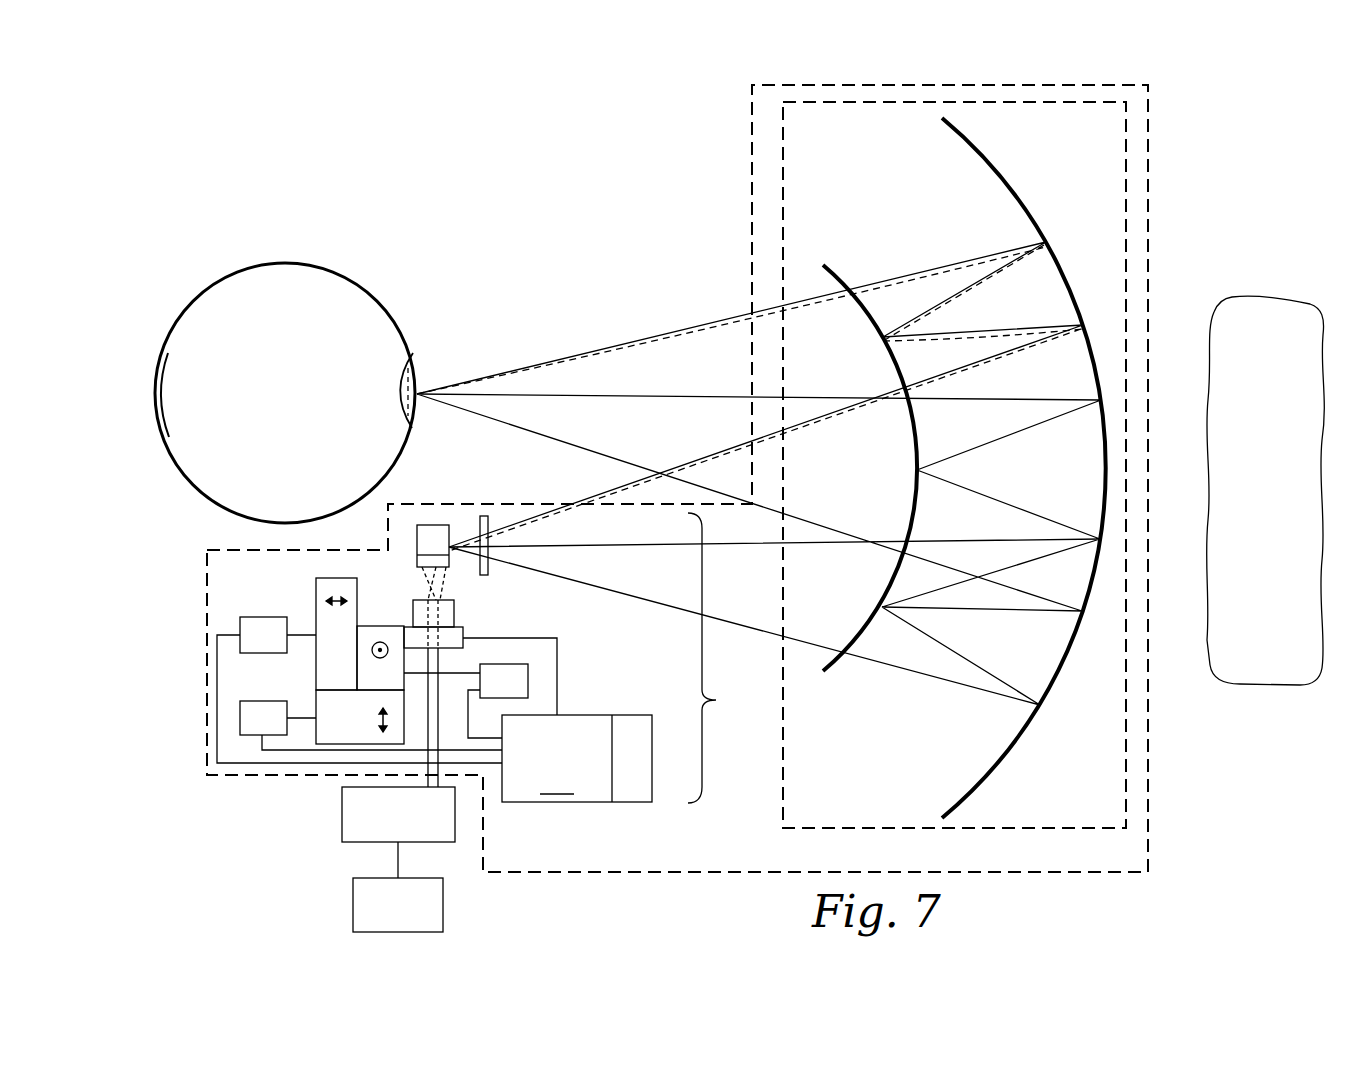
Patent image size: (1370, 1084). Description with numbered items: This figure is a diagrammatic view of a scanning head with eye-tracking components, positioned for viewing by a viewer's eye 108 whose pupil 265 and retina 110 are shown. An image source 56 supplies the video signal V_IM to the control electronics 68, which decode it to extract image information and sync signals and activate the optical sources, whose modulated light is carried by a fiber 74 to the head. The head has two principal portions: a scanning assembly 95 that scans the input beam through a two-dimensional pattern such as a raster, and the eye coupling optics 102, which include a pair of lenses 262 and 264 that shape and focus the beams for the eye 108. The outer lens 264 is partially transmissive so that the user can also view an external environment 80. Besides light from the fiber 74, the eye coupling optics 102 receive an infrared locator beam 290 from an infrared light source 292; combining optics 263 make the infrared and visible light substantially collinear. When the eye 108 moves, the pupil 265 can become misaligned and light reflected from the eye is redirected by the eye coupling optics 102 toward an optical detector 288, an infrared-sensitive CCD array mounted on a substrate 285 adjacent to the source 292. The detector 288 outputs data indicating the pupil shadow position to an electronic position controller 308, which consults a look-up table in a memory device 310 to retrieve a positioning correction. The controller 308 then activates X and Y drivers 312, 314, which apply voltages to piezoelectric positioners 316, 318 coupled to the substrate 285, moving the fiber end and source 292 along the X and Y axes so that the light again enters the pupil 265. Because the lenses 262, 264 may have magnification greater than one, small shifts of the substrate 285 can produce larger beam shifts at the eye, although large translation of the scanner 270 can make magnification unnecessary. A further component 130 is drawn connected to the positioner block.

The image source 56 is at (353, 906).
The control electronics 68 is at (342, 823).
The fiber 74 is at (438, 737).
The external environment 80 is at (1315, 685).
The scanning assembly 95 is at (716, 700).
The eye coupling optics 102 is at (1127, 593).
The viewer's eye 108 is at (282, 263).
The retina 110 is at (160, 383).
The position sensor 130 is at (240, 620).
The lens 262 is at (913, 494).
The combining optics 263 is at (490, 553).
The outer lens 264 is at (1022, 197).
The pupil 265 is at (413, 356).
The scanner 270 is at (1147, 317).
The substrate 285 is at (464, 641).
The optical detector 288 is at (455, 612).
The locator beam 290 is at (440, 580).
The infrared light source 292 is at (410, 597).
The electronic position controller 308 is at (577, 758).
The memory device 310 is at (652, 787).
The X driver 312 is at (528, 685).
The Y driver 314 is at (240, 718).
The piezoelectric positioner 316 is at (313, 737).
The piezoelectric positioner 318 is at (378, 625).